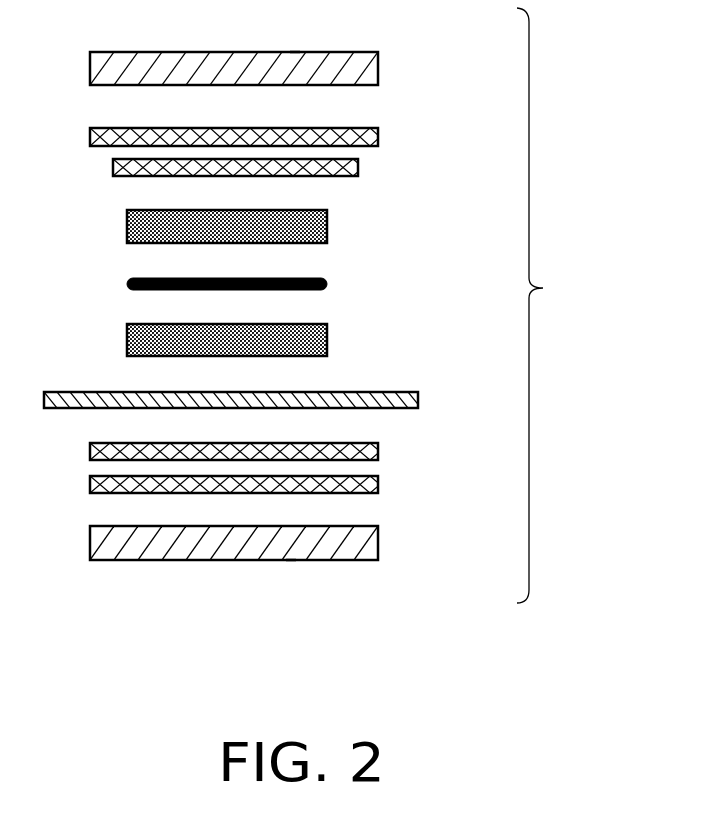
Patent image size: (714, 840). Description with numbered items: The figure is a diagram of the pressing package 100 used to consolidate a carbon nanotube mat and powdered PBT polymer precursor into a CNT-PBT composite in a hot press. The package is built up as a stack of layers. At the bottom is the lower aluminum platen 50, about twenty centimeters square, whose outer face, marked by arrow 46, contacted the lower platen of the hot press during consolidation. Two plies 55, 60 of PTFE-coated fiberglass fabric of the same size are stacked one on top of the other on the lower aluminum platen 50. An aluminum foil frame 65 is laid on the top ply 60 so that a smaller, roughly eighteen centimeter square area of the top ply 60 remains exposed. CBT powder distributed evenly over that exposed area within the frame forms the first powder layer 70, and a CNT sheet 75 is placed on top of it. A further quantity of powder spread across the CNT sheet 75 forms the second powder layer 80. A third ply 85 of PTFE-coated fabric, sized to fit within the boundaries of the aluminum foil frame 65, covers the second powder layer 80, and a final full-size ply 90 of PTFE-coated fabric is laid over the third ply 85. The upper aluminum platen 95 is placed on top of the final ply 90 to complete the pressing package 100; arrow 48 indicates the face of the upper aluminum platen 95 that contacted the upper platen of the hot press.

The pressing package 100 is at (556, 305).
The upper aluminum platen 95 is at (378, 68).
The final ply of PTFE-coated fabric 90 is at (378, 137).
The third ply of PTFE-coated fabric 85 is at (358, 168).
The second powder layer 80 is at (327, 226).
The CNT sheet 75 is at (327, 284).
The first powder layer 70 is at (327, 340).
The aluminum foil frame 65 is at (418, 400).
The top ply of PTFE-coated fiberglass fabric 60 is at (378, 452).
The ply of PTFE-coated fiberglass fabric 55 is at (378, 484).
The lower aluminum platen 50 is at (378, 543).
The arrow indicating face of upper aluminum platen 48 is at (293, 51).
The arrow indicating face of lower aluminum platen 46 is at (290, 561).